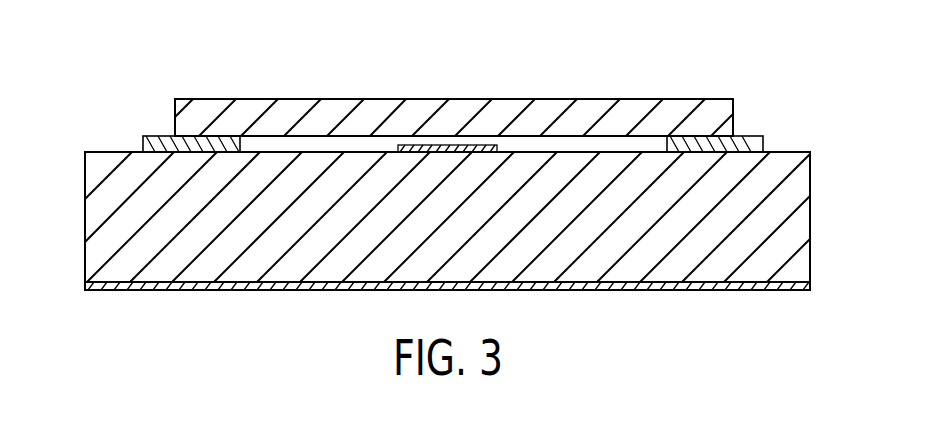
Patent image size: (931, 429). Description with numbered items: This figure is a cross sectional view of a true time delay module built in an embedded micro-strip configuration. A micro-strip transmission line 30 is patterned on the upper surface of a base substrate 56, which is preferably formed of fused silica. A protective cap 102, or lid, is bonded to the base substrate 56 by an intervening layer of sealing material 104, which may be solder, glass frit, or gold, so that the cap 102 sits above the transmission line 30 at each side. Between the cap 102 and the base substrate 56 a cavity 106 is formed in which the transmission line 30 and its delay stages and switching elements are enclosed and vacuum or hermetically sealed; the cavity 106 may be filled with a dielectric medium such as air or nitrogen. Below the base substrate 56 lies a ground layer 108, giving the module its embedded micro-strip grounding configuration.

The micro-strip transmission line 30 is at (398, 148).
The base substrate 56 is at (84, 224).
The cap 102 is at (175, 120).
The sealing material 104 is at (143, 141).
The cavity 106 is at (322, 143).
The ground layer 108 is at (85, 286).